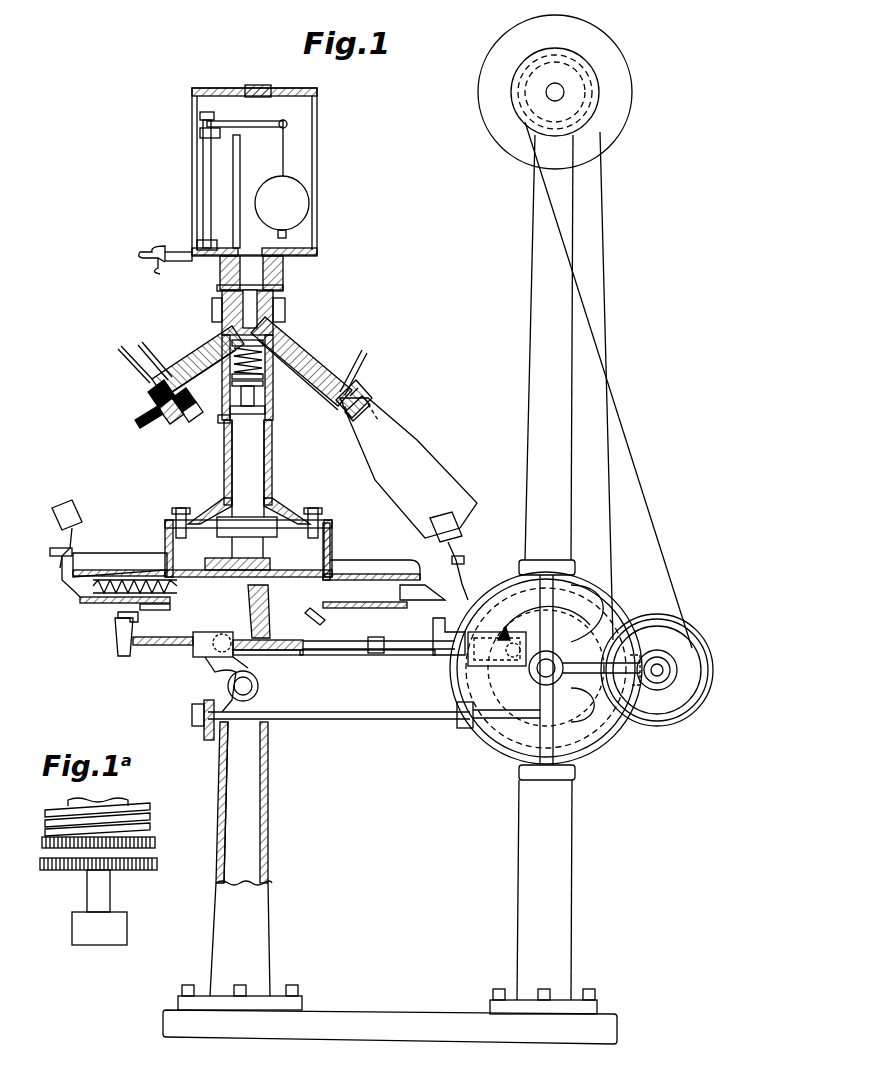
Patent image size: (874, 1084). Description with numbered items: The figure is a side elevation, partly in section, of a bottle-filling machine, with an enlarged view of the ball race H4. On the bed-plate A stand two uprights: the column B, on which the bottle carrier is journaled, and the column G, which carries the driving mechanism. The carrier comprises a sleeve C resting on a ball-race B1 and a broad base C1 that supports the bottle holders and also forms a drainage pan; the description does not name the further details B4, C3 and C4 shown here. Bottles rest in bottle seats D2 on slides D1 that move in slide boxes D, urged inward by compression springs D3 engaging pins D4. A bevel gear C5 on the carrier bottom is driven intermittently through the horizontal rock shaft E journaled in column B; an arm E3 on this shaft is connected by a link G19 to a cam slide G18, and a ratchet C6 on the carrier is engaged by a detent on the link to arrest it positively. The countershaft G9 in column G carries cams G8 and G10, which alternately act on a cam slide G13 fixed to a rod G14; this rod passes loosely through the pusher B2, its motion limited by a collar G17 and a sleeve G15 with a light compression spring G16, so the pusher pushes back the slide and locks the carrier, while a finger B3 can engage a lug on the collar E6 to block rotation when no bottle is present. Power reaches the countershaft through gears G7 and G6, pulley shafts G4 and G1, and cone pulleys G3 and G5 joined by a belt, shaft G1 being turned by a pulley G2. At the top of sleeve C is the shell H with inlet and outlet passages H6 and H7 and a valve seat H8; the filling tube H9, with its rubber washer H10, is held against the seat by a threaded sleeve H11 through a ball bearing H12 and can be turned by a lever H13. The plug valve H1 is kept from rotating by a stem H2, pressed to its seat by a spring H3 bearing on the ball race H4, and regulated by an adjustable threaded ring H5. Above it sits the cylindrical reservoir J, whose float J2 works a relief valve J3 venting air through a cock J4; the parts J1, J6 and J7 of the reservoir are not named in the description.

In FIG. 1, the cylindrical reservoir J is at (317, 190).
In FIG. 1, the tank outlet block J1 is at (285, 280).
In FIG. 1, the float J2 is at (282, 179).
In FIG. 1, the relief valve J3 is at (198, 128).
In FIG. 1, the cock J4 is at (160, 276).
In FIG. 1, the guide rod J6 is at (240, 160).
In FIG. 1, the flange J7 is at (283, 289).
In FIG. 1, the shell H is at (290, 336).
In FIG. 1, the plug valve H1 is at (285, 304).
In FIG. 1, the stem H2 is at (273, 410).
In FIG. 1A, the stem H2 is at (110, 885).
In FIG. 1, the spring H3 is at (273, 392).
In FIG. 1A, the spring H3 is at (150, 806).
In FIG. 1, the ball race H4 is at (232, 384).
In FIG. 1A, the ball race H4 is at (150, 850).
In FIG. 1, the adjustable threaded ring H5 is at (285, 312).
In FIG. 1, the inlet passage H6 is at (205, 352).
In FIG. 1, the outlet passage H7 is at (195, 372).
In FIG. 1, the valve seat H8 is at (160, 372).
In FIG. 1, the filling tube H9 is at (140, 426).
In FIG. 1, the rubber washer H10 is at (178, 408).
In FIG. 1, the threaded adjustable sleeve H11 is at (190, 420).
In FIG. 1, the ball bearing H12 is at (152, 395).
In FIG. 1, the lever H13 is at (128, 358).
In FIG. 1, the column B is at (282, 928).
In FIG. 1, the ball-race B1 is at (275, 510).
In FIG. 1, the pusher B2 is at (248, 573).
In FIG. 1, the finger B3 is at (220, 690).
In FIG. 1, the sleeve B4 is at (273, 428).
In FIG. 1, the sleeve C is at (272, 452).
In FIG. 1, the broad base C1 is at (120, 564).
In FIG. 1, the hook C3 is at (118, 615).
In FIG. 1, the cup C4 is at (115, 650).
In FIG. 1, the bevel gear C5 is at (325, 624).
In FIG. 1, the ratchet C6 is at (165, 645).
In FIG. 1, the slide box D is at (100, 596).
In FIG. 1, the slide D1 is at (70, 590).
In FIG. 1, the bottle seat D2 is at (52, 520).
In FIG. 1, the compression spring D3 is at (147, 610).
In FIG. 1, the pin D4 is at (85, 604).
In FIG. 1, the horizontal shaft E is at (258, 715).
In FIG. 1, the arm E3 is at (200, 657).
In FIG. 1, the collar E6 is at (258, 690).
In FIG. 1, the column G is at (526, 398).
In FIG. 1, the pulley shaft G1 is at (547, 89).
In FIG. 1, the pulley G2 is at (632, 72).
In FIG. 1, the cone pulley G3 is at (590, 82).
In FIG. 1, the pulley shaft G4 is at (657, 676).
In FIG. 1, the cone pulley G5 is at (672, 712).
In FIG. 1, the gear G6 is at (690, 648).
In FIG. 1, the gear G7 is at (600, 740).
In FIG. 1, the cam G8 is at (520, 700).
In FIG. 1, the countershaft G9 is at (513, 657).
In FIG. 1, the cam G10 is at (562, 660).
In FIG. 1, the cam slide G13 is at (490, 666).
In FIG. 1, the rod G14 is at (380, 632).
In FIG. 1, the sleeve G15 is at (280, 655).
In FIG. 1, the compression spring G16 is at (275, 640).
In FIG. 1, the collar G17 is at (226, 634).
In FIG. 1, the cam slide G18 is at (433, 635).
In FIG. 1, the link G19 is at (345, 649).
In FIG. 1, the bed-plate A is at (395, 1020).